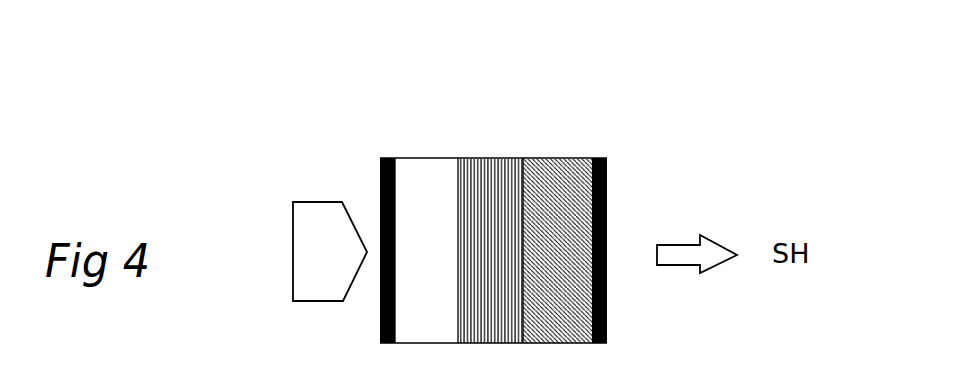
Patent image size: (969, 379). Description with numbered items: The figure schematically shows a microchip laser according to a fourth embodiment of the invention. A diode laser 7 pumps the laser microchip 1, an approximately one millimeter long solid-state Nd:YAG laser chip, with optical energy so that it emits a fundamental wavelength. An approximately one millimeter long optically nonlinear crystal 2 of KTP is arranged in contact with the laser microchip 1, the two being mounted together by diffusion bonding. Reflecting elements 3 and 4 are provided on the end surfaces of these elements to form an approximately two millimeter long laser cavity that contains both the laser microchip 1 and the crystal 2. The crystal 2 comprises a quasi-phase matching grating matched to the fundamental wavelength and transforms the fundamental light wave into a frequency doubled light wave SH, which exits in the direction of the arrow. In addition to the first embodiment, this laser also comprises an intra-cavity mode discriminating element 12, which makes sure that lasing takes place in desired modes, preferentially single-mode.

The laser microchip 1 is at (442, 170).
The optically nonlinear crystal 2 is at (497, 177).
The reflecting element 3 is at (380, 172).
The reflecting element 4 is at (605, 185).
The diode laser 7 is at (317, 215).
The mode discriminating element 12 is at (563, 177).